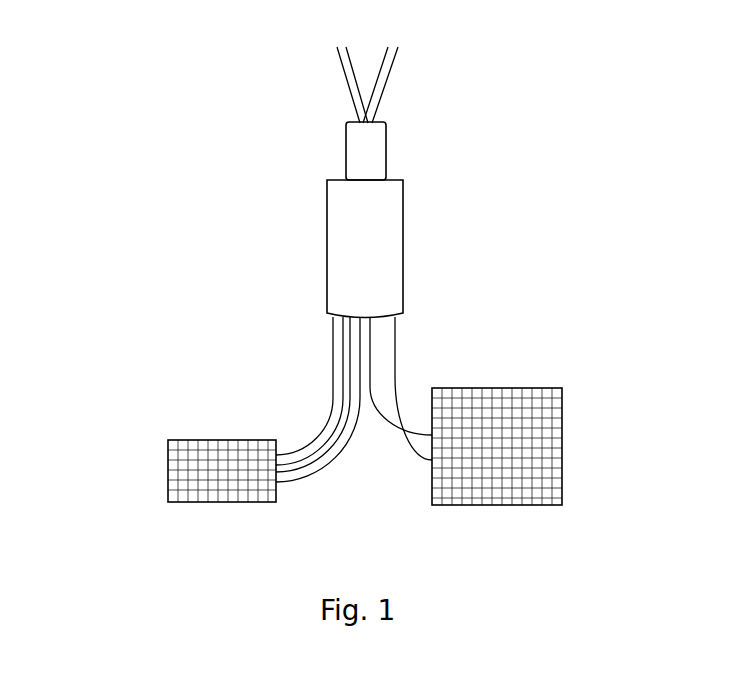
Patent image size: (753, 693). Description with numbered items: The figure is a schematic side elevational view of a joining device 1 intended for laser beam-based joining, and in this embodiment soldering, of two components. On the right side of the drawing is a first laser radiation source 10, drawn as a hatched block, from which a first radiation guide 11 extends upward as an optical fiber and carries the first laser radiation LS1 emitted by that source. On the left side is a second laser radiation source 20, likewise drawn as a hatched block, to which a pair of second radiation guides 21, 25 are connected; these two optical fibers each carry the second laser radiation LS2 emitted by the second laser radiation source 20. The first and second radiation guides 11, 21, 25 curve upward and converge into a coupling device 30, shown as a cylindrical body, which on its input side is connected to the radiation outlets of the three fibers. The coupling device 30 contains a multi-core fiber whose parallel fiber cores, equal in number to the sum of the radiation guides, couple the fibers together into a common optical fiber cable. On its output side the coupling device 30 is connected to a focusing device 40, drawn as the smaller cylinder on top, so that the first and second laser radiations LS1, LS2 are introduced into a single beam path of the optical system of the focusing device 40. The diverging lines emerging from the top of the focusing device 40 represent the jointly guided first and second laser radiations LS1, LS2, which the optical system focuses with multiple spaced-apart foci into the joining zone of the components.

The joining device 1 is at (108, 106).
The first laser radiation source 10 is at (522, 387).
The first radiation guide 11 is at (395, 378).
The second laser radiation source 20 is at (192, 439).
The second radiation guide 21 is at (338, 457).
The second radiation guide 25 is at (322, 428).
The coupling device 30 is at (403, 248).
The focusing device 40 is at (388, 157).
The first laser radiation LS1 is at (407, 61).
The second laser radiation LS2 is at (497, 43).